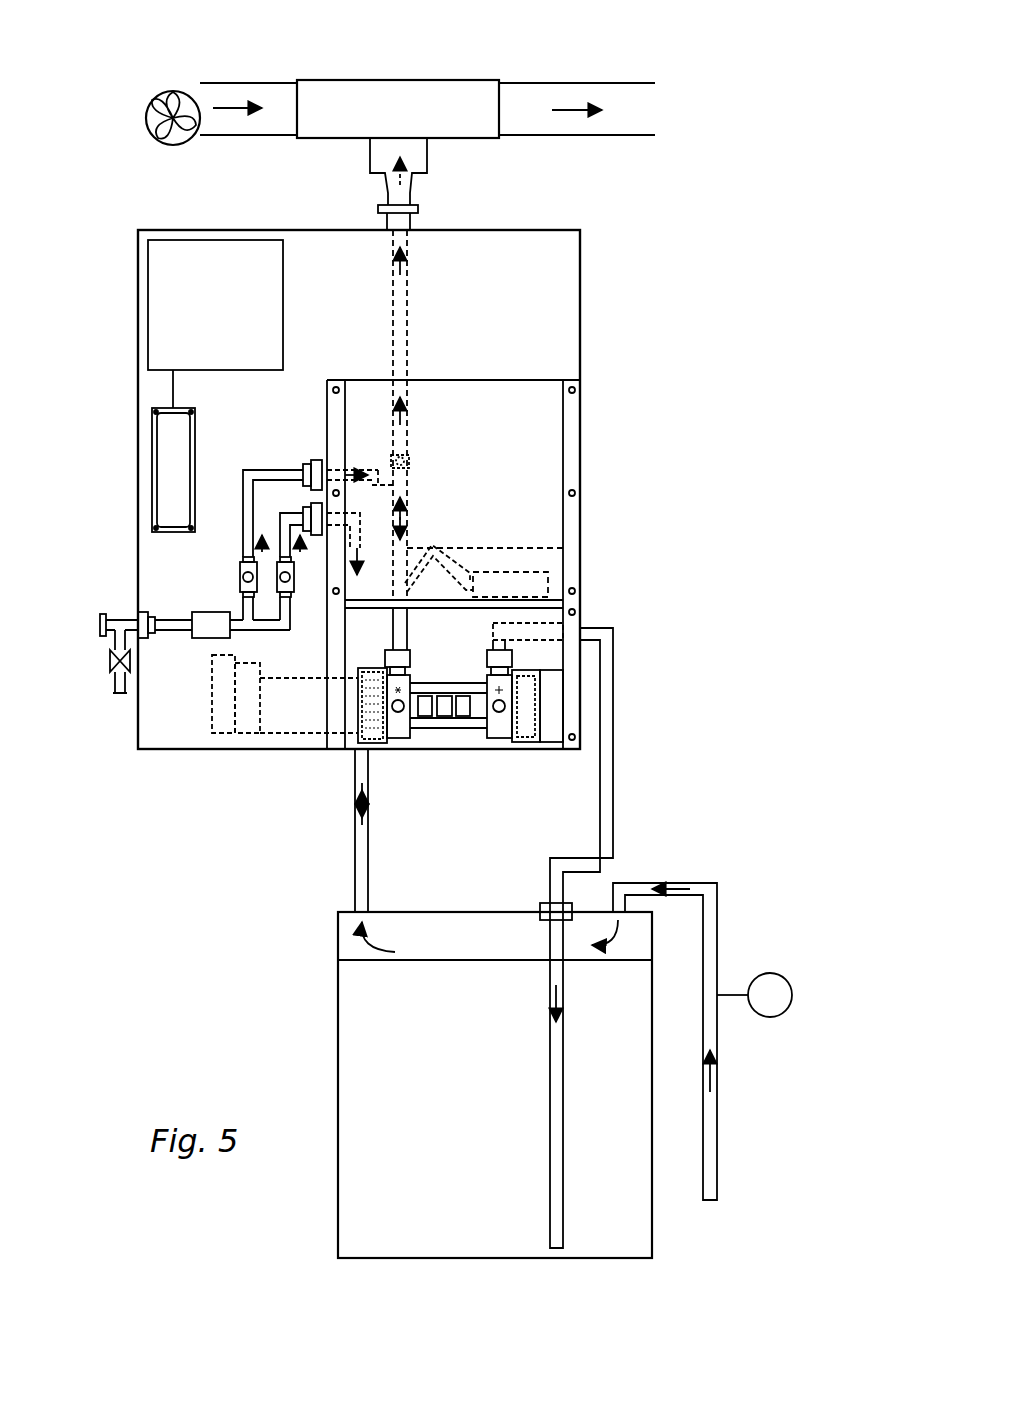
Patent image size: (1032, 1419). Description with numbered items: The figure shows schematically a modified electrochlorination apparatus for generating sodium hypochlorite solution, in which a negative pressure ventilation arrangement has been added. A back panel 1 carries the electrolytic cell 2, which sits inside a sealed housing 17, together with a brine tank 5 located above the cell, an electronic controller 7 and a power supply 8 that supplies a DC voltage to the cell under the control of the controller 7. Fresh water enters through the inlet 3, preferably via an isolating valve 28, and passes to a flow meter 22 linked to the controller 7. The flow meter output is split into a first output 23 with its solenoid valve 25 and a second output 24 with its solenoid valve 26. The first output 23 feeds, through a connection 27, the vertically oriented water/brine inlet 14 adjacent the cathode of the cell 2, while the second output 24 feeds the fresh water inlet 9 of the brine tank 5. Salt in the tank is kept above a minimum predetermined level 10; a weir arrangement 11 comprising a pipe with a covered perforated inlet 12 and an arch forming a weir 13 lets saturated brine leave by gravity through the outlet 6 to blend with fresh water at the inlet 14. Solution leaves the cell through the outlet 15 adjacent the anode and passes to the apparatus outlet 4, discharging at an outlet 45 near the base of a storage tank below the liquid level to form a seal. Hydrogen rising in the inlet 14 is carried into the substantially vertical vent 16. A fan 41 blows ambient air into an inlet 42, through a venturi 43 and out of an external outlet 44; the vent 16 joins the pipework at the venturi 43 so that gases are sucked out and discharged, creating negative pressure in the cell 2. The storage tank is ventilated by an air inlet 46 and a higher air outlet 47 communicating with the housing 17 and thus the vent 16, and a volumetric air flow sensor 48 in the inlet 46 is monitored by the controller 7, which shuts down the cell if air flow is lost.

The back panel 1 is at (548, 298).
The electrolytic cell 2 is at (535, 700).
The inlet 3 is at (120, 692).
The outlet 4 is at (540, 632).
The brine tank 5 is at (540, 398).
The outlet 6 is at (470, 568).
The electronic controller 7 is at (213, 253).
The power supply 8 is at (158, 420).
The fresh water inlet 9 is at (356, 565).
The minimum predetermined level 10 is at (545, 545).
The weir arrangement 11 is at (433, 546).
The perforated inlet 12 is at (548, 580).
The weir 13 is at (433, 560).
The water/brine inlet 14 is at (395, 652).
The outlet 15 is at (515, 655).
The vent 16 is at (400, 293).
The sealed housing 17 is at (565, 730).
The flow meter 22 is at (192, 620).
The first output 23 is at (247, 548).
The second output 24 is at (288, 542).
The solenoid valve 25 is at (240, 582).
The solenoid valve 26 is at (292, 597).
The connection 27 is at (388, 478).
The valve 28 is at (118, 665).
The fan 41 is at (180, 92).
The inlet 42 is at (258, 93).
The venturi 43 is at (402, 78).
The external outlet 44 is at (625, 120).
The outlet 45 is at (555, 1256).
The ventilating air inlet 46 is at (717, 1118).
The air outlet 47 is at (357, 915).
The volumetric air flow sensor 48 is at (770, 972).